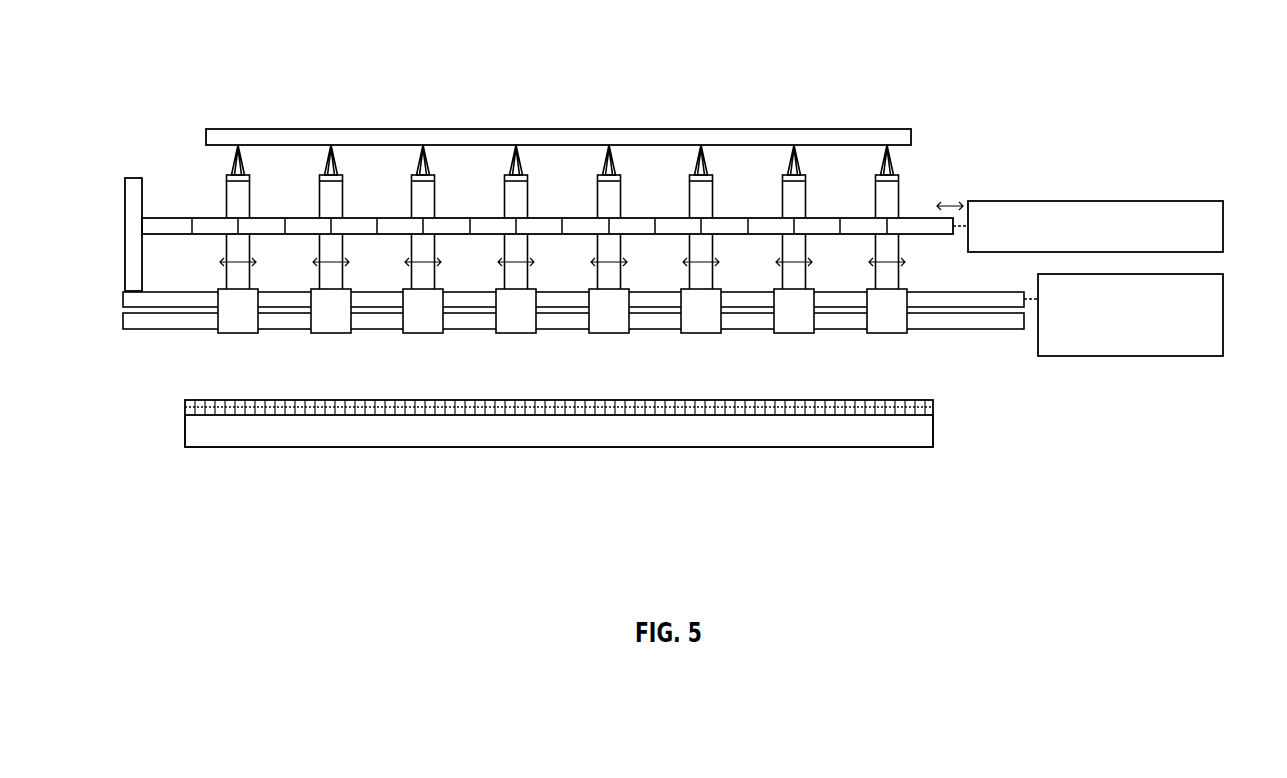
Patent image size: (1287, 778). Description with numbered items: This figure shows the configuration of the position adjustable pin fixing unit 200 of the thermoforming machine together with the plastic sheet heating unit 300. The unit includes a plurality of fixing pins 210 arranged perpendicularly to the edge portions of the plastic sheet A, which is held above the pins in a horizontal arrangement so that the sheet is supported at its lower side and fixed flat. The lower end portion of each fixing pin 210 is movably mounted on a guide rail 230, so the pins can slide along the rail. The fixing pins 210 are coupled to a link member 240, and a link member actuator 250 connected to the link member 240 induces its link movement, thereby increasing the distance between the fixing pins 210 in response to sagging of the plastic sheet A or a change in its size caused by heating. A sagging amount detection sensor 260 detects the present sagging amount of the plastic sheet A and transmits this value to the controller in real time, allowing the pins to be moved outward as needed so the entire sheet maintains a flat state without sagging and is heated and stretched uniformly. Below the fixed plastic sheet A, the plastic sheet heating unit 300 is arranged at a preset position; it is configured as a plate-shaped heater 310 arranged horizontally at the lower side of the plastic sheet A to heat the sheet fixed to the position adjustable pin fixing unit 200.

The position adjustable pin fixing unit 200 is at (181, 175).
The plastic sheet A is at (634, 133).
The fixing pin 210 is at (228, 268).
The guide rail 230 is at (463, 310).
The link member 240 is at (363, 234).
The link member actuator 250 is at (1015, 201).
The sagging amount detection sensor 260 is at (1130, 356).
The plastic sheet heating unit 300 is at (938, 425).
The plate-shaped heater 310 is at (665, 432).